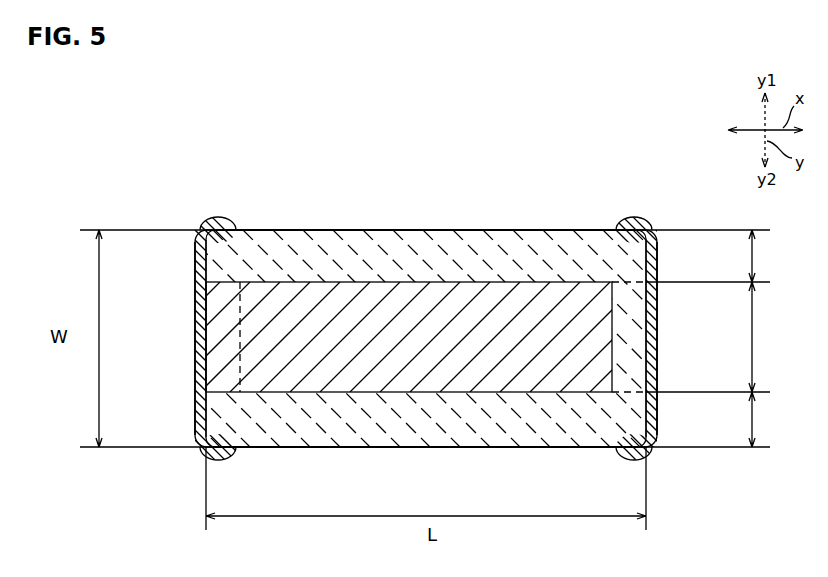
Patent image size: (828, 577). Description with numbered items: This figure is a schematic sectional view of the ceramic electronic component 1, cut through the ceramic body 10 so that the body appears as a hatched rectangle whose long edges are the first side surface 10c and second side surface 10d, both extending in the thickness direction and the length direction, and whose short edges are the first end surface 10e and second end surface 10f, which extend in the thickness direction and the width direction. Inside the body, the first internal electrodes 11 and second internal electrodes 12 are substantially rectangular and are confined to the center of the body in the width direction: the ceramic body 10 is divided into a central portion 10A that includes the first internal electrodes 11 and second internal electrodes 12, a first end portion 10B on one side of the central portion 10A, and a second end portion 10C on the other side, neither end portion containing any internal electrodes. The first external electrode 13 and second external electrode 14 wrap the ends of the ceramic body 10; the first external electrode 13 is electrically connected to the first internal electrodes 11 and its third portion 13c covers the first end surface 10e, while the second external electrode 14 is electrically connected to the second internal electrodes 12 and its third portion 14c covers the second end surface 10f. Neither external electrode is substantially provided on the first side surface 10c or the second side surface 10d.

The ceramic electronic component 1 is at (658, 135).
The ceramic body 10 is at (551, 223).
The central portion 10A is at (775, 337).
The first end portion 10B is at (773, 256).
The second end portion 10C is at (775, 419).
The first side surface 10c is at (459, 448).
The second side surface 10d is at (474, 229).
The first end surface 10e is at (205, 380).
The second end surface 10f is at (646, 310).
The first internal electrodes 11 is at (545, 412).
The second internal electrodes 12 is at (240, 393).
The first external electrode 13 is at (187, 359).
The third portion 13c is at (196, 311).
The second external electrode 14 is at (665, 358).
The third portion 14c is at (658, 413).